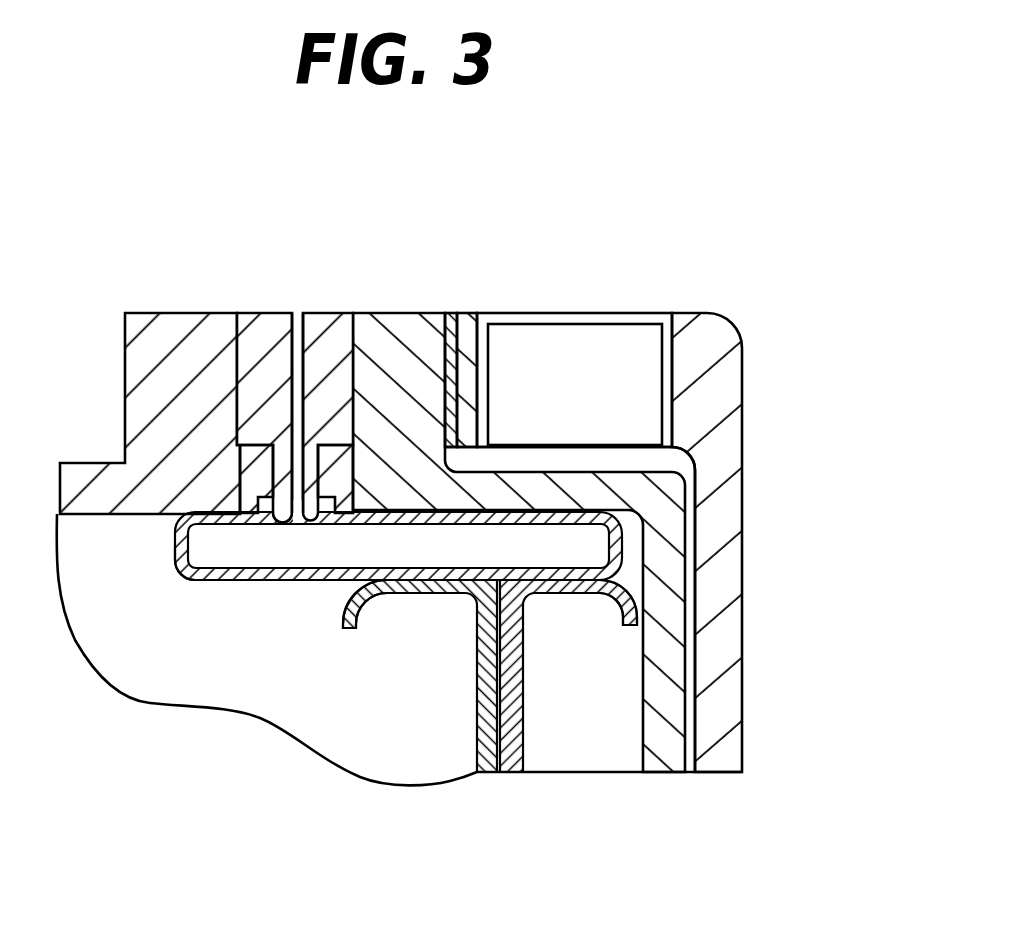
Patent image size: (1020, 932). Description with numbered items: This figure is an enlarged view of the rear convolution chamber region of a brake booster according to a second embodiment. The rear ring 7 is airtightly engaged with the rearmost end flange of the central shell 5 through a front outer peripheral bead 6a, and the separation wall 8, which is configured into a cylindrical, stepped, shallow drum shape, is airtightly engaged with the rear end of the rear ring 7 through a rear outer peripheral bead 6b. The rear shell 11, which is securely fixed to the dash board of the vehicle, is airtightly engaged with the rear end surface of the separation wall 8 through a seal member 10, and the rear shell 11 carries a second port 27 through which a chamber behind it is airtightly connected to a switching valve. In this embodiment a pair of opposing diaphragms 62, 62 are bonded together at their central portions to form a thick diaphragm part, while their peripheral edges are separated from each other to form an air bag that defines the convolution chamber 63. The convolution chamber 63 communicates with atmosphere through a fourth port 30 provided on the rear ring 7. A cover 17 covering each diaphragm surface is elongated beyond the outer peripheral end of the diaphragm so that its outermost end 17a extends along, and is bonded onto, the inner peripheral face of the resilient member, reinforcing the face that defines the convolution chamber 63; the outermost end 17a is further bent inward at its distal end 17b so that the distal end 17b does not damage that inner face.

The central shell 5 is at (147, 320).
The front outer peripheral bead 6a is at (242, 456).
The rear ring 7 is at (318, 363).
The fourth port 30 is at (297, 318).
The rear outer peripheral bead 6b is at (348, 457).
The separation wall 8 is at (407, 320).
The seal member 10 is at (452, 318).
The second port 27 is at (613, 330).
The rear shell 11 is at (730, 500).
The opposing diaphragm 62 is at (537, 543).
The convolution chamber 63 is at (183, 582).
The cover 17 is at (465, 742).
The outermost end 17a is at (577, 595).
The distal end 17b is at (347, 632).